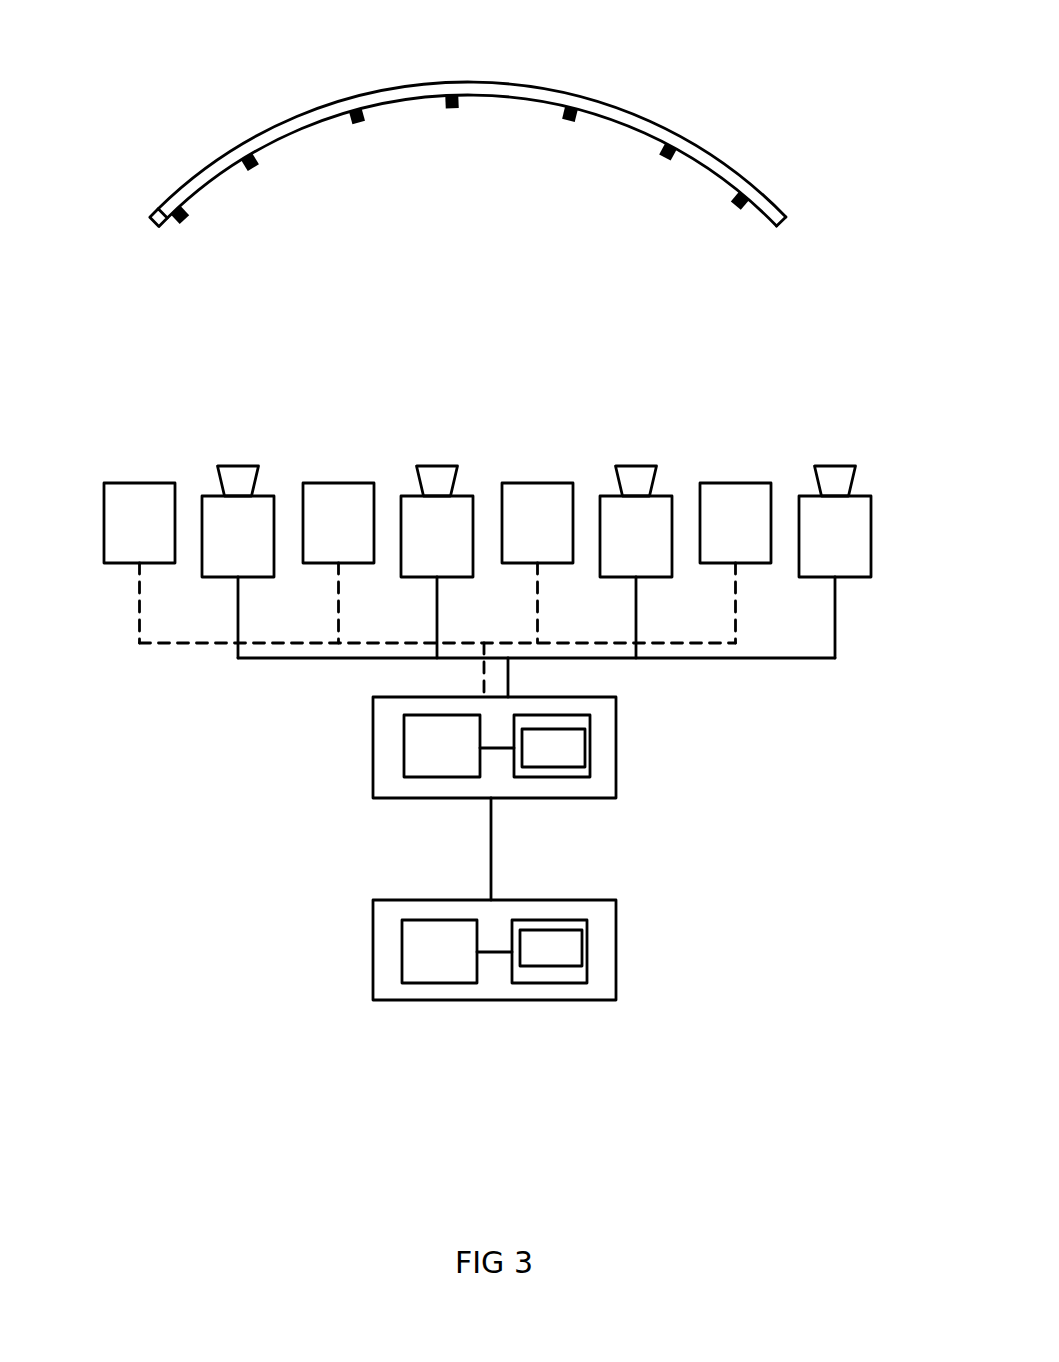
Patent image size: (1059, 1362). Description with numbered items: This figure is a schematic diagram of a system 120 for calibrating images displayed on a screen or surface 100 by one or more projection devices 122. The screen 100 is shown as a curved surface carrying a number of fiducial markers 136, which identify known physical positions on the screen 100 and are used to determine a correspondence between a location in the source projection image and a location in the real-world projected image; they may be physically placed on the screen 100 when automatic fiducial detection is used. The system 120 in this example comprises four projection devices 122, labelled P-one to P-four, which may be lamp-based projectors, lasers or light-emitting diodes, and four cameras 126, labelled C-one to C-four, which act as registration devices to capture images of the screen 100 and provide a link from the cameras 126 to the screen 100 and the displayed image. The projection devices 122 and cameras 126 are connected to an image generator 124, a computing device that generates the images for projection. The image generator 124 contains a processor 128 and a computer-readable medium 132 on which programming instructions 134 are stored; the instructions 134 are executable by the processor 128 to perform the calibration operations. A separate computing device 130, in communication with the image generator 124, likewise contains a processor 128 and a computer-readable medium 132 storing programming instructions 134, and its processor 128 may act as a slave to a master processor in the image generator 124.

The screen 100 is at (156, 209).
The system 120 is at (812, 108).
The projection devices 122 is at (104, 560).
The image generator 124 is at (370, 737).
The cameras 126 is at (853, 579).
The processors 128 is at (441, 849).
The separate computing device 130 is at (373, 938).
The computer-readable medium 132 is at (590, 748).
The programming instructions 134 is at (552, 847).
The fiducial markers 136 is at (360, 122).